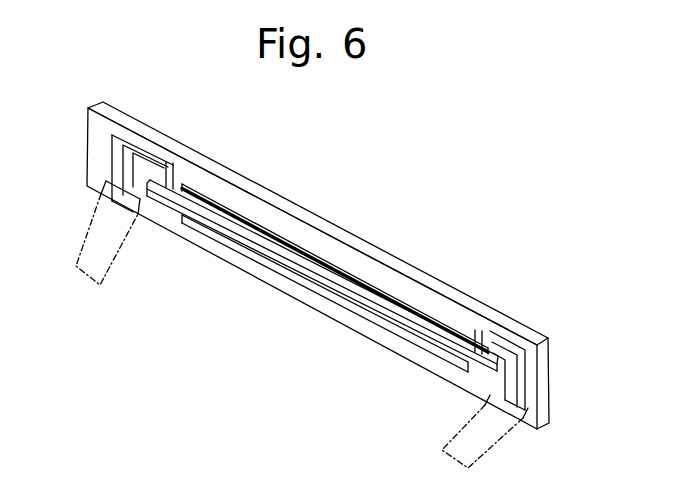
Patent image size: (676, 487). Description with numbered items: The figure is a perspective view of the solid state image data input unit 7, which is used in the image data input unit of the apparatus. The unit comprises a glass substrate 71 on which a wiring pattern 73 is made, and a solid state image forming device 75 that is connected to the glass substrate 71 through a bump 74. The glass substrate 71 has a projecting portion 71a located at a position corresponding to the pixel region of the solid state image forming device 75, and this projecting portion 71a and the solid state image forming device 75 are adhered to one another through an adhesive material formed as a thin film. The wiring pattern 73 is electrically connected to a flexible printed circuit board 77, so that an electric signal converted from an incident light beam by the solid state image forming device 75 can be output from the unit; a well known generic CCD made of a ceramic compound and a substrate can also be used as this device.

The solid state image data input unit 7 is at (319, 264).
The glass substrate 71 is at (319, 245).
The projecting portion 71a is at (373, 278).
The wiring pattern 73 is at (111, 161).
The bump 74 is at (182, 190).
The solid state image forming device 75 is at (337, 291).
The flexible printed circuit board 77 is at (107, 247).